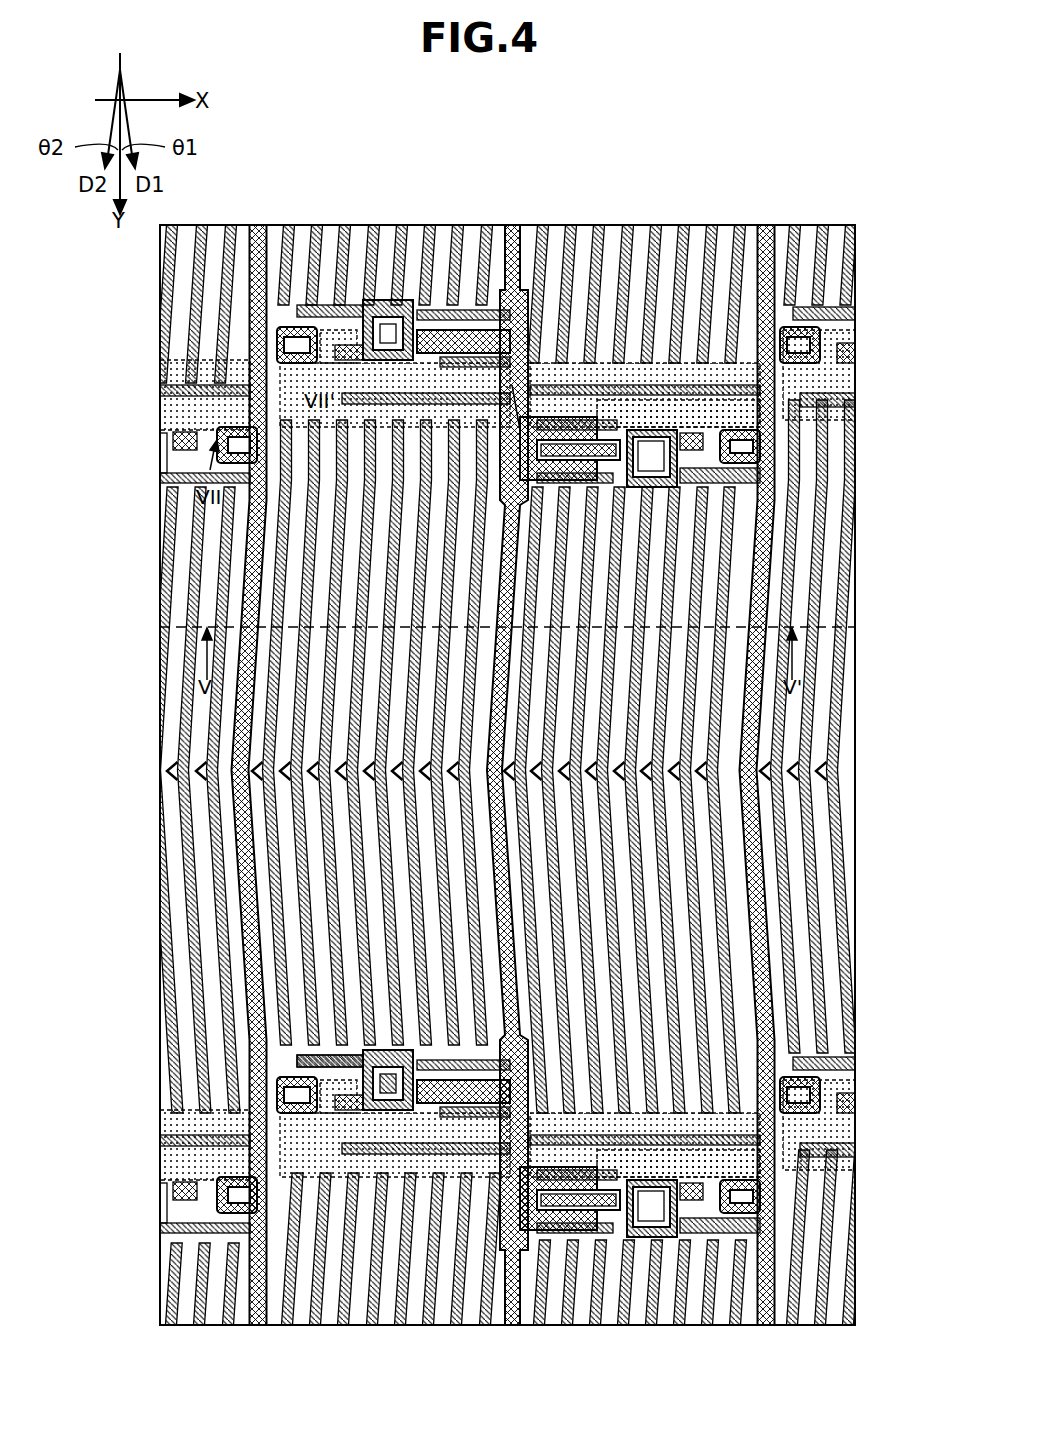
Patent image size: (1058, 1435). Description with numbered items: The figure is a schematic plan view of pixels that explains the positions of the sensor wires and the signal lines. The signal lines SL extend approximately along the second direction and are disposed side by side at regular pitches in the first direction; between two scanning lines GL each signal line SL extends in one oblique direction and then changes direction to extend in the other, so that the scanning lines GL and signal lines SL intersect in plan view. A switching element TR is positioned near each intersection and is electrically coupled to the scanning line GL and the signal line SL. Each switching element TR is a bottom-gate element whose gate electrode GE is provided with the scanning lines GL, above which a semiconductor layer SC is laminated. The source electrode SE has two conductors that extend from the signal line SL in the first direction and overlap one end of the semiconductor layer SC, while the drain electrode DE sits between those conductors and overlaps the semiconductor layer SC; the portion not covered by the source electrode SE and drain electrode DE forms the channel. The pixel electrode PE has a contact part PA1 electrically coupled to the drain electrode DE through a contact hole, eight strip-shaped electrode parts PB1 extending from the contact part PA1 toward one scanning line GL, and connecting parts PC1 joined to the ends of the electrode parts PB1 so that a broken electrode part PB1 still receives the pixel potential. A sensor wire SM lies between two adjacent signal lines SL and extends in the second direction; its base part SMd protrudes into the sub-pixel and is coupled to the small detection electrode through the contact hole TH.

The pixel electrode PE is at (439, 764).
The electrode part PB1 is at (300, 1004).
The connecting part PC1 is at (246, 1078).
The contact part PA1 is at (345, 1128).
The scanning line GL is at (162, 400).
The signal line SL is at (512, 1326).
The sensor wire SM is at (262, 1326).
The base part SMd is at (292, 302).
The contact hole TH is at (277, 344).
The semiconductor layer SC is at (385, 300).
The drain electrode DE is at (455, 312).
The source electrode SE is at (492, 330).
The gate electrode GE is at (548, 350).
The switching element TR is at (526, 276).